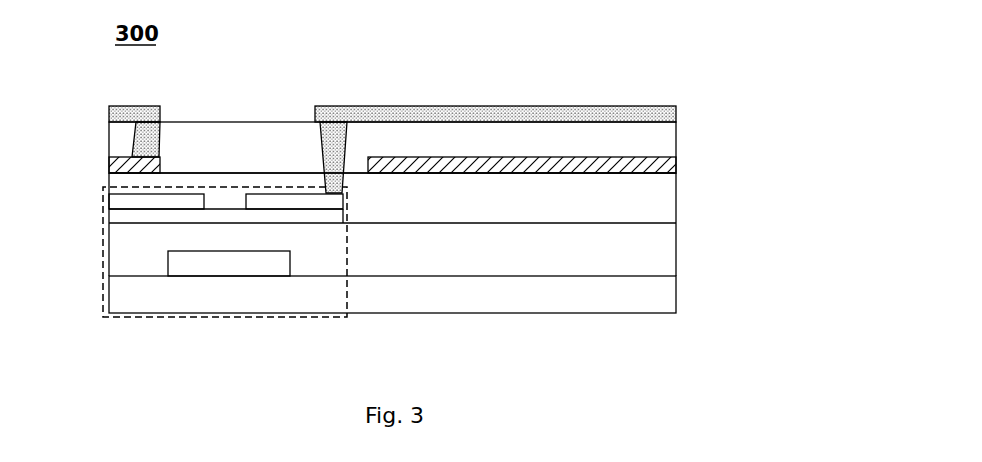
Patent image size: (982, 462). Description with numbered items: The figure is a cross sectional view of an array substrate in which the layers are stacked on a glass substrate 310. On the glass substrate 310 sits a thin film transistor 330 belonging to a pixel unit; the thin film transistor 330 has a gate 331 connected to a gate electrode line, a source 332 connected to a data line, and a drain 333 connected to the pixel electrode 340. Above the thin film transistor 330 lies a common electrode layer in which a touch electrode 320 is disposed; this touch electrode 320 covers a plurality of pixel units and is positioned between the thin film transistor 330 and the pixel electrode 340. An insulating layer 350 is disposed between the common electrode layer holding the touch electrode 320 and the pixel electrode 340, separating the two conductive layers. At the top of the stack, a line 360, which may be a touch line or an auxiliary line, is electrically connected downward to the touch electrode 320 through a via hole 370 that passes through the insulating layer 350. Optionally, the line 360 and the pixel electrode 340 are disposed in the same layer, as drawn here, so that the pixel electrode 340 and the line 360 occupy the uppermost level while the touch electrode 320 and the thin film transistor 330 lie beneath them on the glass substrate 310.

The glass substrate 310 is at (667, 298).
The touch electrode 320 is at (677, 168).
The thin film transistor 330 is at (288, 318).
The gate 331 is at (227, 260).
The source 332 is at (113, 203).
The drain 333 is at (332, 200).
The pixel electrode 340 is at (565, 105).
The insulating layer 350 is at (667, 131).
The line 360 is at (133, 105).
The via hole 370 is at (158, 140).